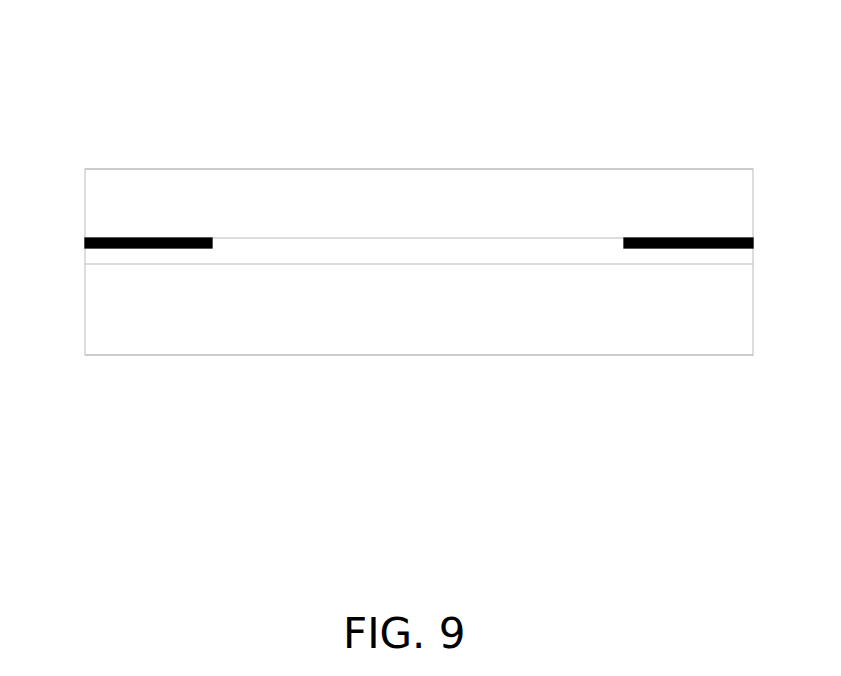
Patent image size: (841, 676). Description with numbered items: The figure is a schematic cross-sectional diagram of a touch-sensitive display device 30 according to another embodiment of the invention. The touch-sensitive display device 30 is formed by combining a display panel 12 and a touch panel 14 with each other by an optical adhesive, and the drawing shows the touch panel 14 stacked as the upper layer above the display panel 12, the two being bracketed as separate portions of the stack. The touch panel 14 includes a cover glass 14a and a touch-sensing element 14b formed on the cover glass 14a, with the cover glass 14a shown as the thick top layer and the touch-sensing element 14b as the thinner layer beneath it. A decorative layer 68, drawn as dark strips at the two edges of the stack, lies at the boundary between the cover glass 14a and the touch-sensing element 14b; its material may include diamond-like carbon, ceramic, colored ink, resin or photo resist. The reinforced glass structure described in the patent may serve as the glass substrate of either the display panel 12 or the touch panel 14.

The touch-sensitive display device 30 is at (116, 23).
The touch panel 14 is at (63, 171).
The display panel 12 is at (64, 264).
The cover glass 14a is at (426, 190).
The touch-sensing element 14b is at (498, 252).
The decorative layer 68 is at (675, 238).